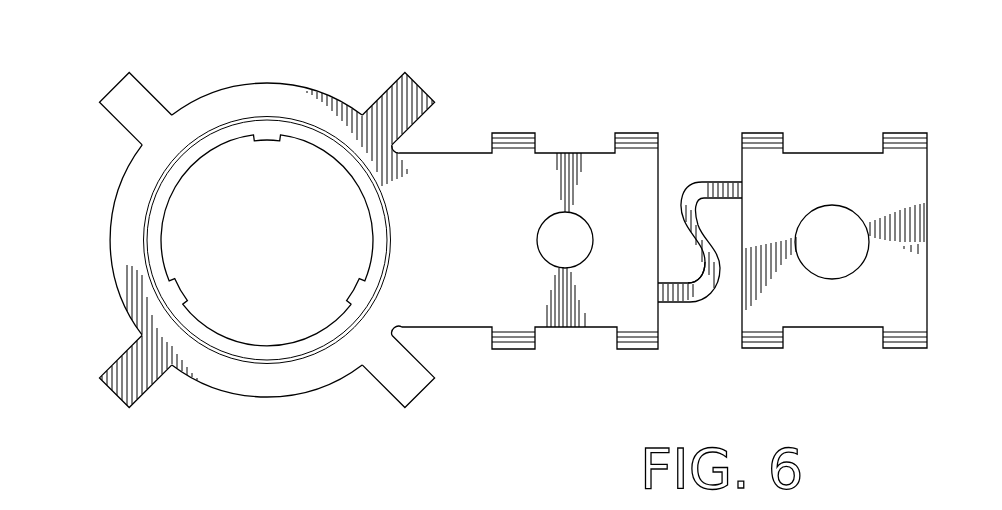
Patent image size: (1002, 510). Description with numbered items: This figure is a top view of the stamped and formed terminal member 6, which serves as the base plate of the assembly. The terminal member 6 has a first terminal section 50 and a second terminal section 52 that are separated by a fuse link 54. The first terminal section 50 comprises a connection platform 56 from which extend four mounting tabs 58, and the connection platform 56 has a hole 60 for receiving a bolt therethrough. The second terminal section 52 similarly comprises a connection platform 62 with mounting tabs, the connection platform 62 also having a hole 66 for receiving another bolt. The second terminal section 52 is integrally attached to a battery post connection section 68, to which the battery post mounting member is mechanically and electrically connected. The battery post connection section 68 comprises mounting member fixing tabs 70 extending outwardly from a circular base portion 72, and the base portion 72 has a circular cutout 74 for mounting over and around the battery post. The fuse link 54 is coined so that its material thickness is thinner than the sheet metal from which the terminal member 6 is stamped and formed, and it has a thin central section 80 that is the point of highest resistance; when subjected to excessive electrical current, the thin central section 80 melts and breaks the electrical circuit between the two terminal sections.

The terminal member 6 is at (590, 85).
The first terminal section 50 is at (830, 365).
The second terminal section 52 is at (552, 362).
The fuse link 54 is at (724, 182).
The connection platform 56 is at (910, 198).
The mounting tabs 58 is at (902, 350).
The hole 60 is at (866, 258).
The connection platform 62 is at (628, 340).
The hole 66 is at (538, 238).
The battery post connection section 68 is at (190, 108).
The mounting member fixing tabs 70 is at (117, 93).
The circular base portion 72 is at (209, 376).
The circular cutout 74 is at (163, 229).
The thin central section 80 is at (708, 244).